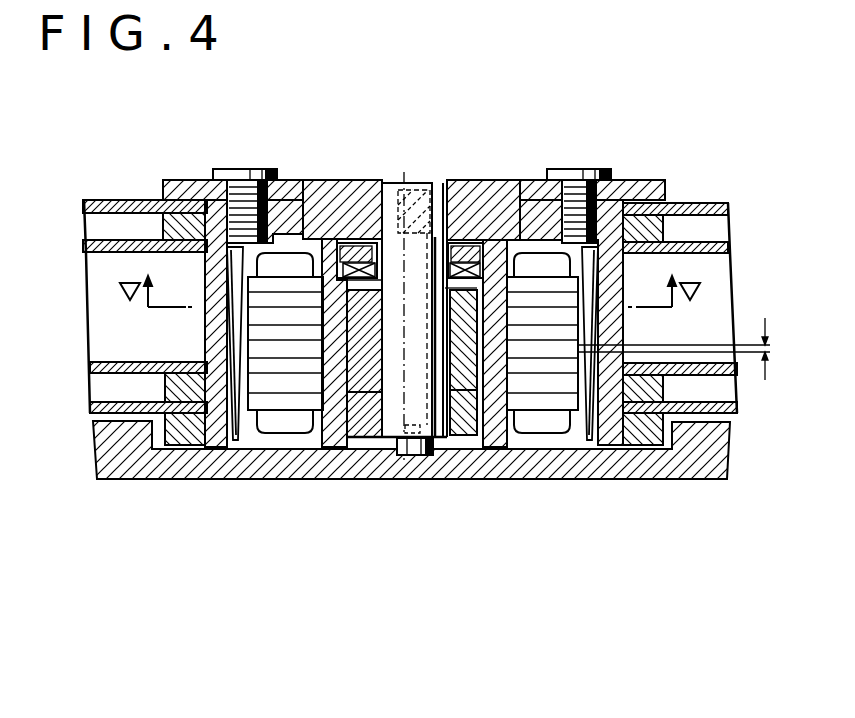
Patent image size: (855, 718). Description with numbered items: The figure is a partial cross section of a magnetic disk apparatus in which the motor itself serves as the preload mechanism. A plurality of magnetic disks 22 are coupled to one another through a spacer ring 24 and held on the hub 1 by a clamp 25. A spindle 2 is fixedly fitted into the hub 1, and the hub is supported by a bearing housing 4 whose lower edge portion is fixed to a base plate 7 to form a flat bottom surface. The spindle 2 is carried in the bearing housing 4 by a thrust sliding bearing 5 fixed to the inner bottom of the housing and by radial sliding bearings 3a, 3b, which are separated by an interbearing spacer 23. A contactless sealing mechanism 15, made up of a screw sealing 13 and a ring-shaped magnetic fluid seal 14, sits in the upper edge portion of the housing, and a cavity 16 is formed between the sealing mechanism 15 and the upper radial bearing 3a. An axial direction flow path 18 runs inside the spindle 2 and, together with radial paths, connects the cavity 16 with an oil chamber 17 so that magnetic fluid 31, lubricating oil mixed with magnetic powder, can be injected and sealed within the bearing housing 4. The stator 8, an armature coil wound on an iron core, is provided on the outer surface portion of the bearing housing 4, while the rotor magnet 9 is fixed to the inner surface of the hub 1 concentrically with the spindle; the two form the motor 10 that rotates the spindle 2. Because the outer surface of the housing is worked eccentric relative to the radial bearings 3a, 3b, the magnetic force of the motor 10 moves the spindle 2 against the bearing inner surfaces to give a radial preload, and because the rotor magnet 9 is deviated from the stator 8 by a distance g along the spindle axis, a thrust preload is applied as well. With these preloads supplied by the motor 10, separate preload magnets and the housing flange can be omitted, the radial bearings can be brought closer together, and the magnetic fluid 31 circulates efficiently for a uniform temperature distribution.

The hub 1 is at (478, 190).
The spindle 2 is at (386, 192).
The radial sliding bearing 3a is at (517, 330).
The radial sliding bearing 3b is at (470, 435).
The bearing housing 4 is at (323, 425).
The thrust sliding bearing 5 is at (410, 450).
The base plate 7 is at (185, 470).
The stator 8 is at (600, 427).
The rotor magnet 9 is at (655, 430).
The motor 10 is at (418, 382).
The screw sealing 13 is at (367, 243).
The magnetic fluid seal 14 is at (345, 255).
The contactless sealing mechanism 15 is at (394, 169).
The cavity 16 is at (482, 242).
The oil chamber 17 is at (368, 415).
The axial direction flow path 18 is at (418, 188).
The magnetic disk 22 is at (703, 192).
The interbearing spacer 23 is at (478, 318).
The spacer ring 24 is at (643, 196).
The clamp 25 is at (176, 182).
The magnetic fluid 31 is at (443, 415).
The distance g is at (682, 349).